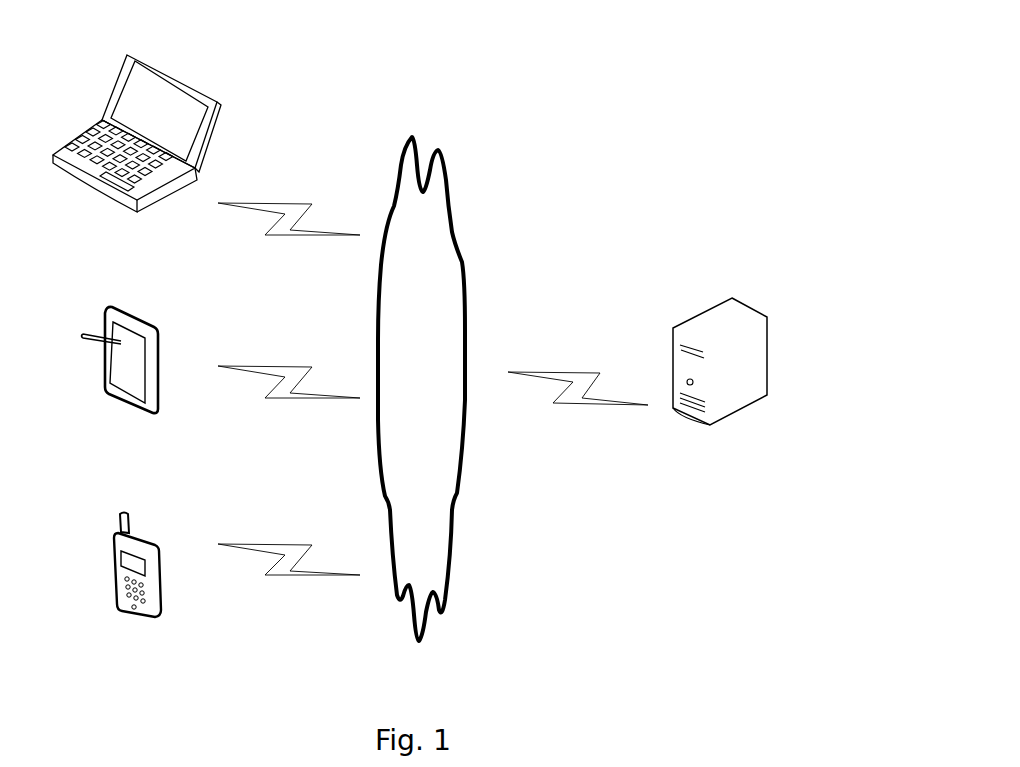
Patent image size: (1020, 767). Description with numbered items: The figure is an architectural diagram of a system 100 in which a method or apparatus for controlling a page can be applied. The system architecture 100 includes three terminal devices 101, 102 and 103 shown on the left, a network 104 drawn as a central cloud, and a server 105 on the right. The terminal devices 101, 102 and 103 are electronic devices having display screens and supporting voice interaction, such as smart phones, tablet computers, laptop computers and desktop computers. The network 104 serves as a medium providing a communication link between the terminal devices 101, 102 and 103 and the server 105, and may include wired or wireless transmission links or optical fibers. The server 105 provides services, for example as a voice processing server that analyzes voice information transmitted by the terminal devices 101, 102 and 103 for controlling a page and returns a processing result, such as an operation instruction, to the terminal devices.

The system architecture 100 is at (637, 44).
The terminal device 101 is at (137, 587).
The terminal device 102 is at (120, 380).
The terminal device 103 is at (137, 153).
The network 104 is at (421, 389).
The server 105 is at (720, 384).